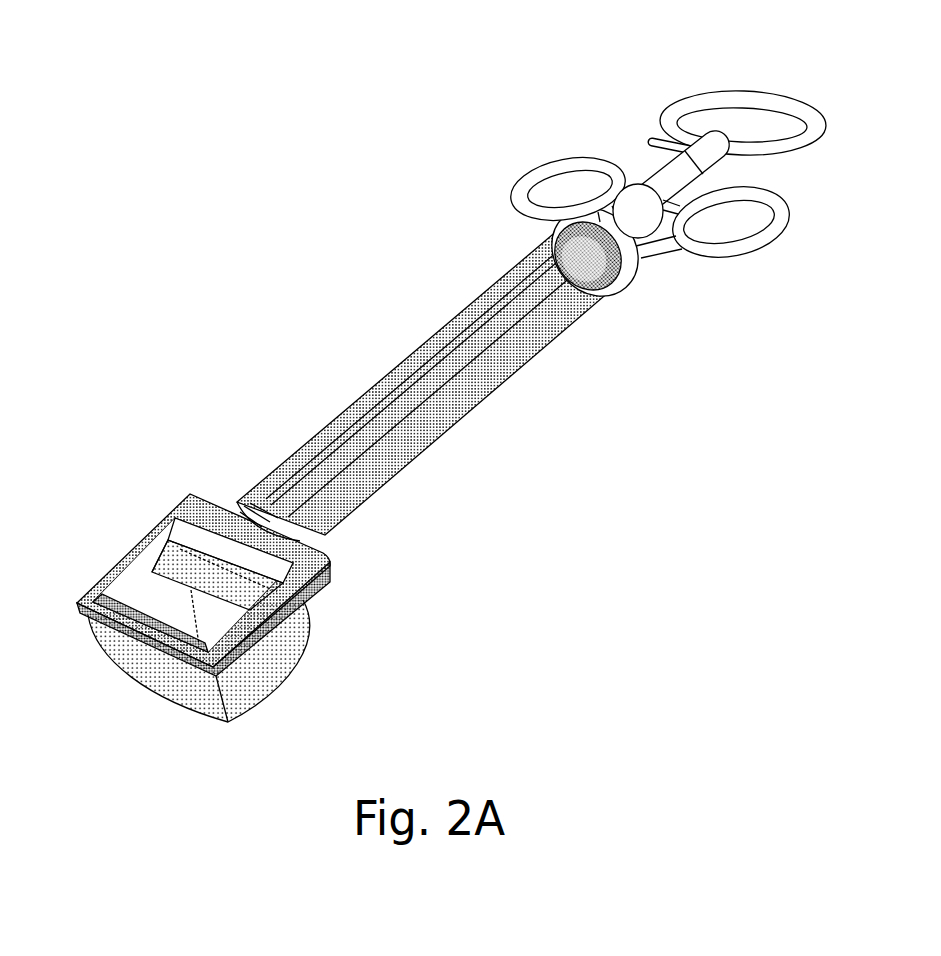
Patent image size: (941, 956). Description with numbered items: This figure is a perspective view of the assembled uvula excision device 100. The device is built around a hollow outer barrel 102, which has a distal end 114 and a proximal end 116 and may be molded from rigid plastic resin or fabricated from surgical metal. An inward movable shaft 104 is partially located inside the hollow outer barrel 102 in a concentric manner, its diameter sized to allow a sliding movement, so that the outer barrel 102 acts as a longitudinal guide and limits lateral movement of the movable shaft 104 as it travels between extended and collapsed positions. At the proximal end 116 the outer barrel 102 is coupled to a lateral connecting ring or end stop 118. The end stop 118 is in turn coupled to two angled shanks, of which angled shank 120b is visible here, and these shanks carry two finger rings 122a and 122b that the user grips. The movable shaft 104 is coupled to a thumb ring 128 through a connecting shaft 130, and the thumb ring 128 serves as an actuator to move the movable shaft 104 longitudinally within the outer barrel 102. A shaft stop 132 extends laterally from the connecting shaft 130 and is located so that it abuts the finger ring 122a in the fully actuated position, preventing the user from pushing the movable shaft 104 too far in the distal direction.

The uvula excision device 100 is at (484, 390).
The outer barrel 102 is at (428, 379).
The movable shaft 104 is at (427, 403).
The distal end 114 is at (235, 510).
The proximal end 116 is at (550, 230).
The end stop 118 is at (625, 285).
The angled shank 120b is at (648, 255).
The finger ring 122a is at (535, 170).
The finger ring 122b is at (767, 240).
The thumb ring 128 is at (805, 104).
The connecting shaft 130 is at (710, 165).
The shaft stop 132 is at (652, 140).